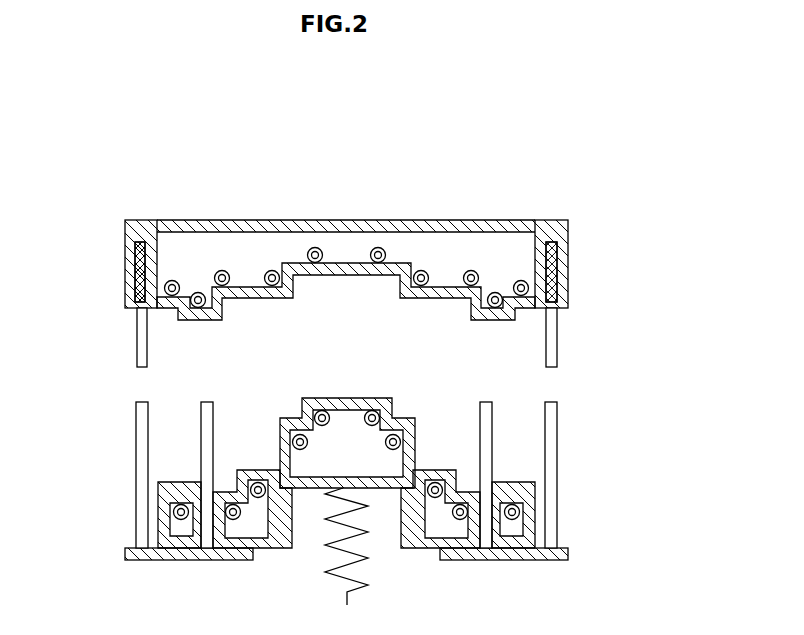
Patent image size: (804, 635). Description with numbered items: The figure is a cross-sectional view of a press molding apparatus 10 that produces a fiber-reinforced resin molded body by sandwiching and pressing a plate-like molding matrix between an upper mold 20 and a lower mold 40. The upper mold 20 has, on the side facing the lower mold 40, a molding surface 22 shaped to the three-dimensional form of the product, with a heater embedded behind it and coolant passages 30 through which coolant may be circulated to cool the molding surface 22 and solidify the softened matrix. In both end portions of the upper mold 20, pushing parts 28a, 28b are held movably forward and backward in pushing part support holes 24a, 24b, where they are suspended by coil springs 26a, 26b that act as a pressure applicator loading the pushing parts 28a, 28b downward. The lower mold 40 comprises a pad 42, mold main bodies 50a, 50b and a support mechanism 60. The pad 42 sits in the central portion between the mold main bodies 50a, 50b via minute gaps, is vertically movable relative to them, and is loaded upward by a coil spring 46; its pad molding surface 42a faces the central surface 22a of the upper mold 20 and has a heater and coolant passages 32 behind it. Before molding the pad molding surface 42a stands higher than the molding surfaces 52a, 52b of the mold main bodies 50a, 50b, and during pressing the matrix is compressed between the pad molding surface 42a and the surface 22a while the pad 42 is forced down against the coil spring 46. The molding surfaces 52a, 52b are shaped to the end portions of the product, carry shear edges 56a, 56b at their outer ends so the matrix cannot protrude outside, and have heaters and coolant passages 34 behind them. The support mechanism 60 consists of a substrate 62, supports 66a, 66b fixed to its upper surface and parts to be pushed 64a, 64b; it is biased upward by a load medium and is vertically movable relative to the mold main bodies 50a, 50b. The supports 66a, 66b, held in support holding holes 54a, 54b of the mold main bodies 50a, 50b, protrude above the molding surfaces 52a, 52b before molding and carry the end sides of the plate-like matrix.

The press molding apparatus 10 is at (589, 193).
The upper mold 20 is at (590, 272).
The molding surface 22 is at (265, 306).
The surface of the central portion of the upper mold 22a is at (347, 276).
The pushing part support hole 24a is at (133, 296).
The pushing part support hole 24b is at (560, 290).
The coil spring 26a is at (128, 264).
The coil spring 26b is at (568, 243).
The pushing part 28a is at (140, 340).
The pushing part 28b is at (560, 342).
The coolant passages 30 is at (315, 247).
The coolant passages 32 is at (301, 489).
The coolant passages 34 is at (258, 499).
The lower mold 40 is at (592, 470).
The pad 42 is at (401, 395).
The pad molding surface 42a is at (347, 397).
The coil spring 46 is at (362, 562).
The mold main body 50a is at (186, 466).
The mold main body 50b is at (531, 445).
The molding surface 52a is at (238, 468).
The molding surface 52b is at (430, 468).
The support holding hole 54a is at (236, 521).
The support holding hole 54b is at (460, 521).
The shear edge 56a is at (182, 521).
The shear edge 56b is at (512, 521).
The support mechanism 60 is at (121, 529).
The substrate 62 is at (126, 555).
The part to be pushed 64a is at (138, 438).
The part to be pushed 64b is at (556, 438).
The support 66a is at (202, 425).
The support 66b is at (491, 425).